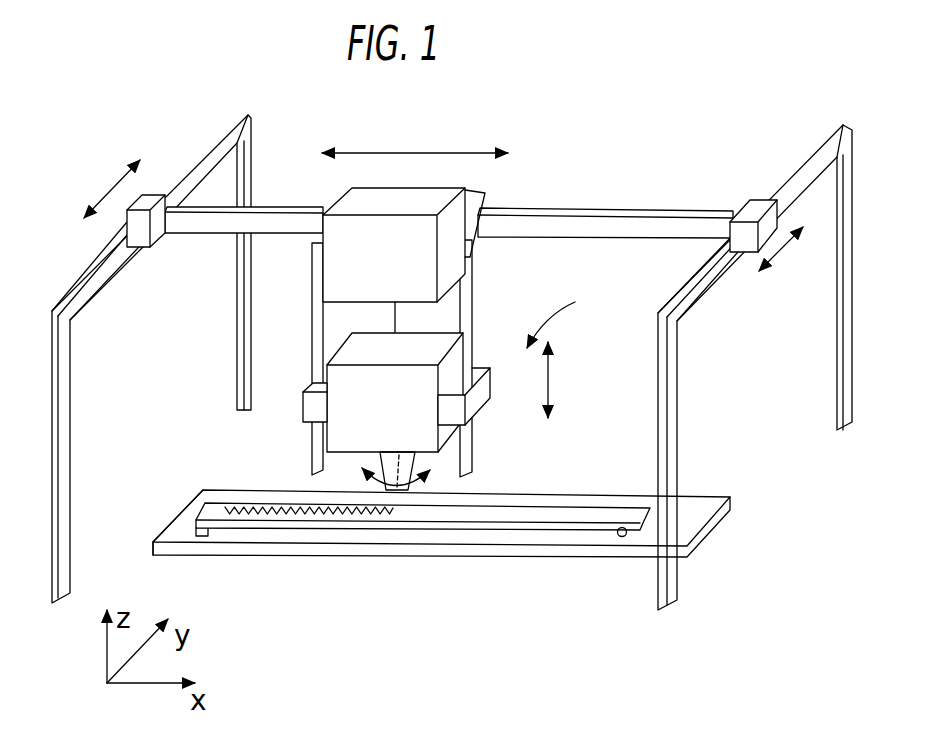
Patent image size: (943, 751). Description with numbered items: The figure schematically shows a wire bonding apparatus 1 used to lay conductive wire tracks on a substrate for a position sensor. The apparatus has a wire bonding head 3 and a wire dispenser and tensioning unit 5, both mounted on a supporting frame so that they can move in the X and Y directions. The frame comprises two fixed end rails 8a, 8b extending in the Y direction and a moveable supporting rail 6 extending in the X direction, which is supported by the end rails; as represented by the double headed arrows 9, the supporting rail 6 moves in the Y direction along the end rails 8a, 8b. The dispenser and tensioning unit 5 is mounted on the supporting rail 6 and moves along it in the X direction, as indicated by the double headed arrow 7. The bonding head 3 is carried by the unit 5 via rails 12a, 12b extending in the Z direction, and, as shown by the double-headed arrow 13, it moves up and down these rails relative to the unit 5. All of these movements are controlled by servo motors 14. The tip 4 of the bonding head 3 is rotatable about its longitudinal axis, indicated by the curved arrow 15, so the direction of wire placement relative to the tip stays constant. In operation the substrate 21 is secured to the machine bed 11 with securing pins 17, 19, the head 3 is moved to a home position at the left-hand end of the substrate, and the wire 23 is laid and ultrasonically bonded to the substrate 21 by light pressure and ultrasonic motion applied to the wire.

The wire bonding apparatus 1 is at (556, 318).
The wire bonding head 3 is at (445, 350).
The tip 4 is at (395, 458).
The wire dispenser and tensioning unit 5 is at (352, 207).
The supporting rail 6 is at (598, 210).
The double headed arrow 7 is at (423, 152).
The end rail 8a is at (202, 158).
The end rail 8b is at (805, 163).
The double headed arrows 9 is at (118, 187).
The machine bed 11 is at (698, 502).
The rail 12a is at (313, 318).
The rail 12b is at (474, 308).
The double-headed arrow 13 is at (550, 382).
The servo motors 14 is at (162, 240).
The rotation of nozzle 15 is at (358, 462).
The securing pin 17 is at (208, 542).
The securing pin 19 is at (620, 540).
The substrate 21 is at (572, 516).
The wire 23 is at (237, 506).